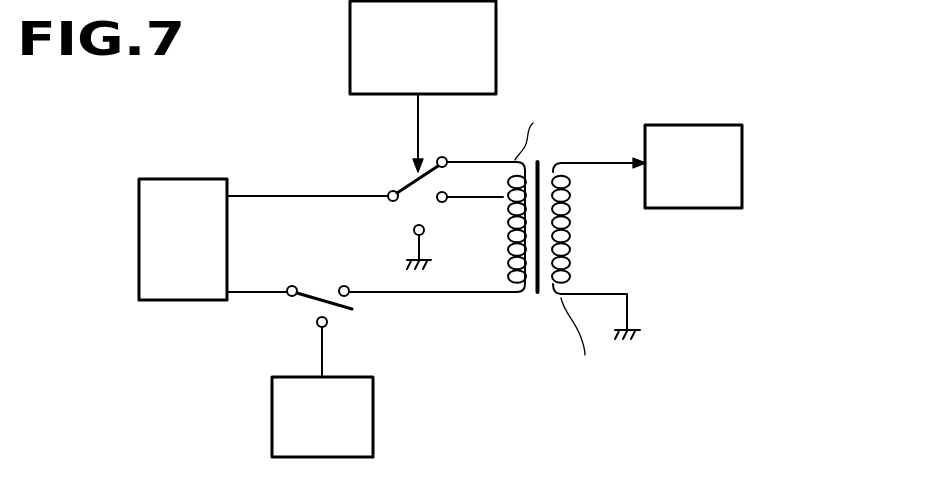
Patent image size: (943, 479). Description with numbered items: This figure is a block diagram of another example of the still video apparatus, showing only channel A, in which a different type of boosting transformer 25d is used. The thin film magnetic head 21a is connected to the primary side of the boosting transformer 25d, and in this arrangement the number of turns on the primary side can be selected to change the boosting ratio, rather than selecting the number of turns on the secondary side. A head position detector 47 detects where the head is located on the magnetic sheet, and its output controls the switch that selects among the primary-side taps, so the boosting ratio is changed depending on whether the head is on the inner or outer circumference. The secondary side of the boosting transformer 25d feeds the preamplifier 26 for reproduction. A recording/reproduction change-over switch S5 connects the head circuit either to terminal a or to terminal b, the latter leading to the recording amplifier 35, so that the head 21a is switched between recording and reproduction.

The magnetic head 21a is at (184, 179).
The head position detector 47 is at (350, 67).
The preamplifier 26 is at (703, 125).
The recording amplifier 35 is at (373, 405).
The recording/reproduction change-over switch S5 is at (308, 302).
The terminal a is at (350, 280).
The terminal b is at (327, 326).
The boosting transformer 25d is at (536, 298).